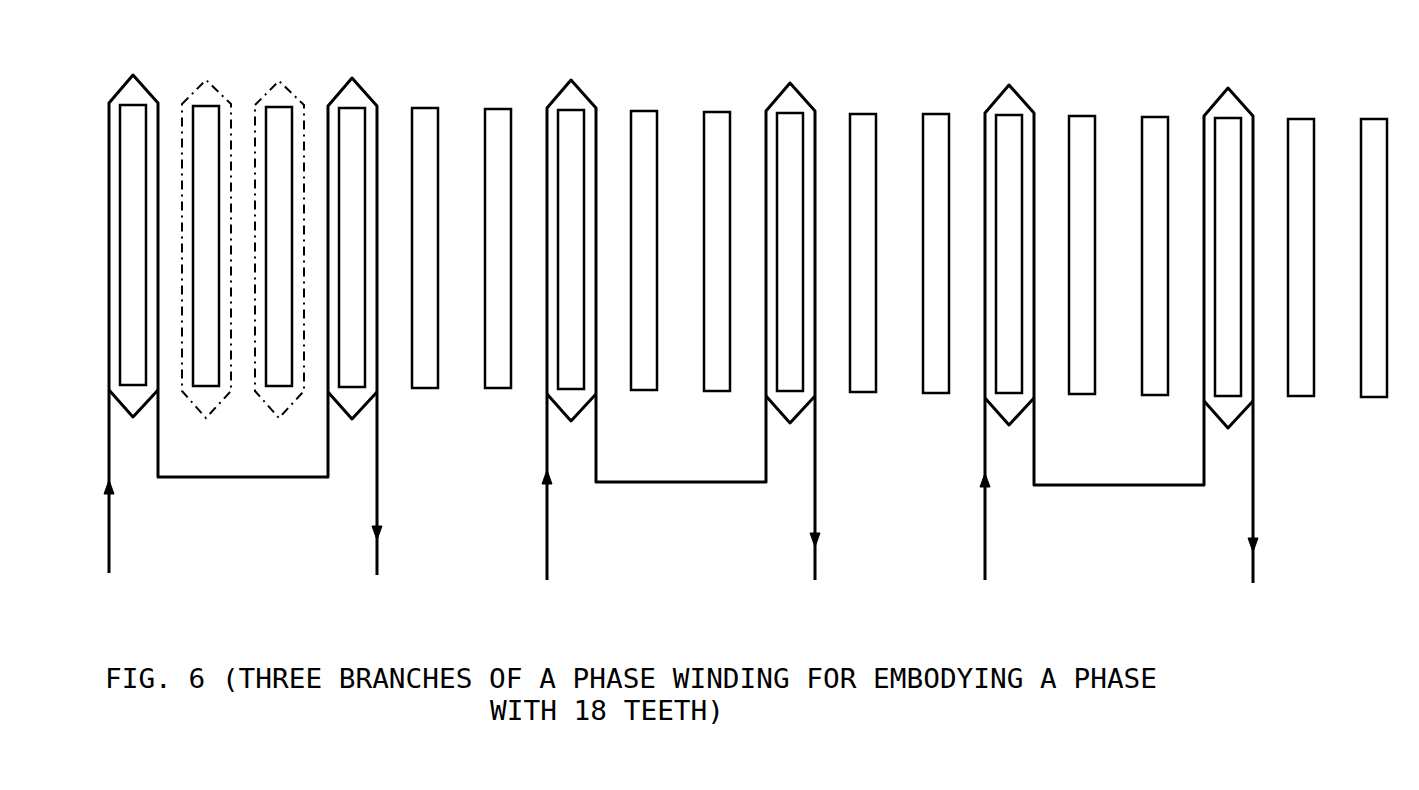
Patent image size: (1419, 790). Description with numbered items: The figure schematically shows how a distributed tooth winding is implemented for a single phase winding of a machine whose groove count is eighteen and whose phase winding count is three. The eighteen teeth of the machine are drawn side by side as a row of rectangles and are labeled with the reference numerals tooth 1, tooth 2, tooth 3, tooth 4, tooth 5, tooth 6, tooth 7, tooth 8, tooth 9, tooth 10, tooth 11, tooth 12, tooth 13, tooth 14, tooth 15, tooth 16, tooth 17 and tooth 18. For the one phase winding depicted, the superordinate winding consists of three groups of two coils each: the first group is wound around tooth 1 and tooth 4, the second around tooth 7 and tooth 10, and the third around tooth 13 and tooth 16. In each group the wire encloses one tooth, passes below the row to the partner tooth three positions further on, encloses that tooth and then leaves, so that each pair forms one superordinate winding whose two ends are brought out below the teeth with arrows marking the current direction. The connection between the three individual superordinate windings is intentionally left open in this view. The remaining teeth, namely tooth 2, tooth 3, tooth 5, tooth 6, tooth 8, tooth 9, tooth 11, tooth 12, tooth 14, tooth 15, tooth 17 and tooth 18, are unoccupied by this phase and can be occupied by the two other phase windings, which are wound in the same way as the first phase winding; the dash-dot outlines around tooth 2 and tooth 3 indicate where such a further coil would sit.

The tooth 1 is at (133, 212).
The tooth 2 is at (206, 213).
The tooth 3 is at (279, 213).
The tooth 4 is at (352, 214).
The tooth 5 is at (425, 215).
The tooth 6 is at (498, 215).
The tooth 7 is at (571, 216).
The tooth 8 is at (644, 217).
The tooth 9 is at (717, 218).
The tooth 10 is at (798, 218).
The tooth 11 is at (871, 219).
The tooth 12 is at (944, 220).
The tooth 13 is at (1017, 220).
The tooth 14 is at (1090, 221).
The tooth 15 is at (1163, 222).
The tooth 16 is at (1236, 223).
The tooth 17 is at (1309, 223).
The tooth 18 is at (1382, 224).